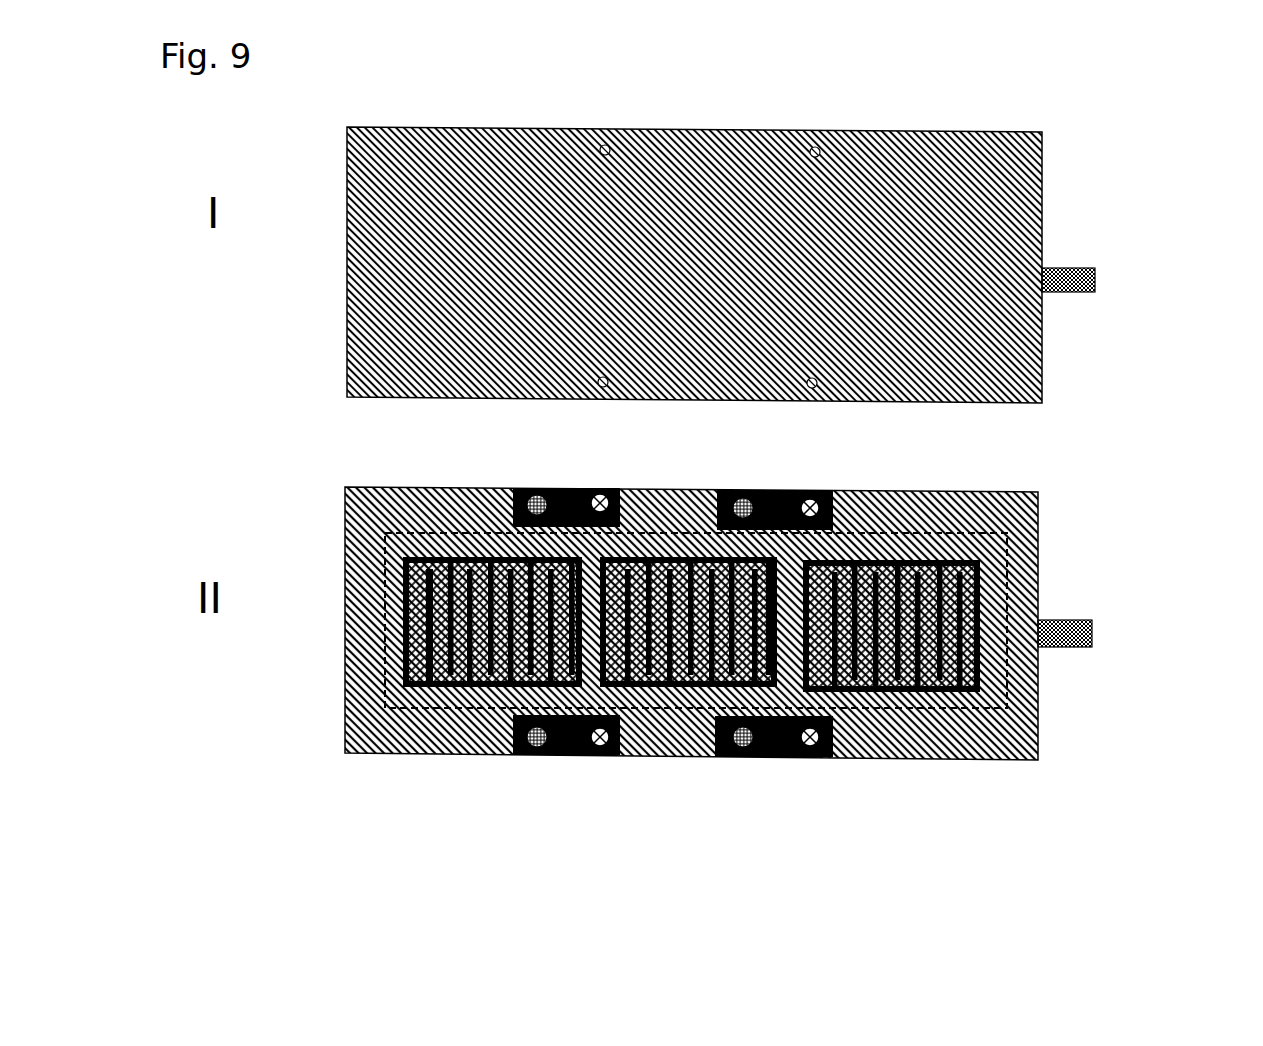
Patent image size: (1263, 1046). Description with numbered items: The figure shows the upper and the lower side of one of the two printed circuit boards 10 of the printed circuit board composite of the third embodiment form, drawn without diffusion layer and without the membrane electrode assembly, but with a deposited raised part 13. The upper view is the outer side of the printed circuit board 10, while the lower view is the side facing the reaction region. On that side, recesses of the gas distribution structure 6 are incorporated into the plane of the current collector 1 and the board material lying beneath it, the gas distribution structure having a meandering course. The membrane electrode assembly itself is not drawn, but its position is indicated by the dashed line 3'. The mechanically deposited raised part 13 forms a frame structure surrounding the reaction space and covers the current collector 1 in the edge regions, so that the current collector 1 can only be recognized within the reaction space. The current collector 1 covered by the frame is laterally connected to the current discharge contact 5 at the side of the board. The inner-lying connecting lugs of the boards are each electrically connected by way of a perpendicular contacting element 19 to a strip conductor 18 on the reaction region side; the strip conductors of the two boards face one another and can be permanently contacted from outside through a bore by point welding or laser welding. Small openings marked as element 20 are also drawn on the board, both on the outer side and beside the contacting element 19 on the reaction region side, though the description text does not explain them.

The current collector 1 is at (445, 636).
The dashed line indicating the position of the MEA 3' is at (712, 568).
The current discharge contact 5 is at (1074, 642).
The gas distribution structure 6 is at (430, 565).
The printed circuit board 10 is at (1025, 565).
The raised part 13 is at (367, 642).
The strip conductor 18 is at (567, 757).
The contacting element 19 is at (527, 488).
The fastening hole 20 is at (607, 390).